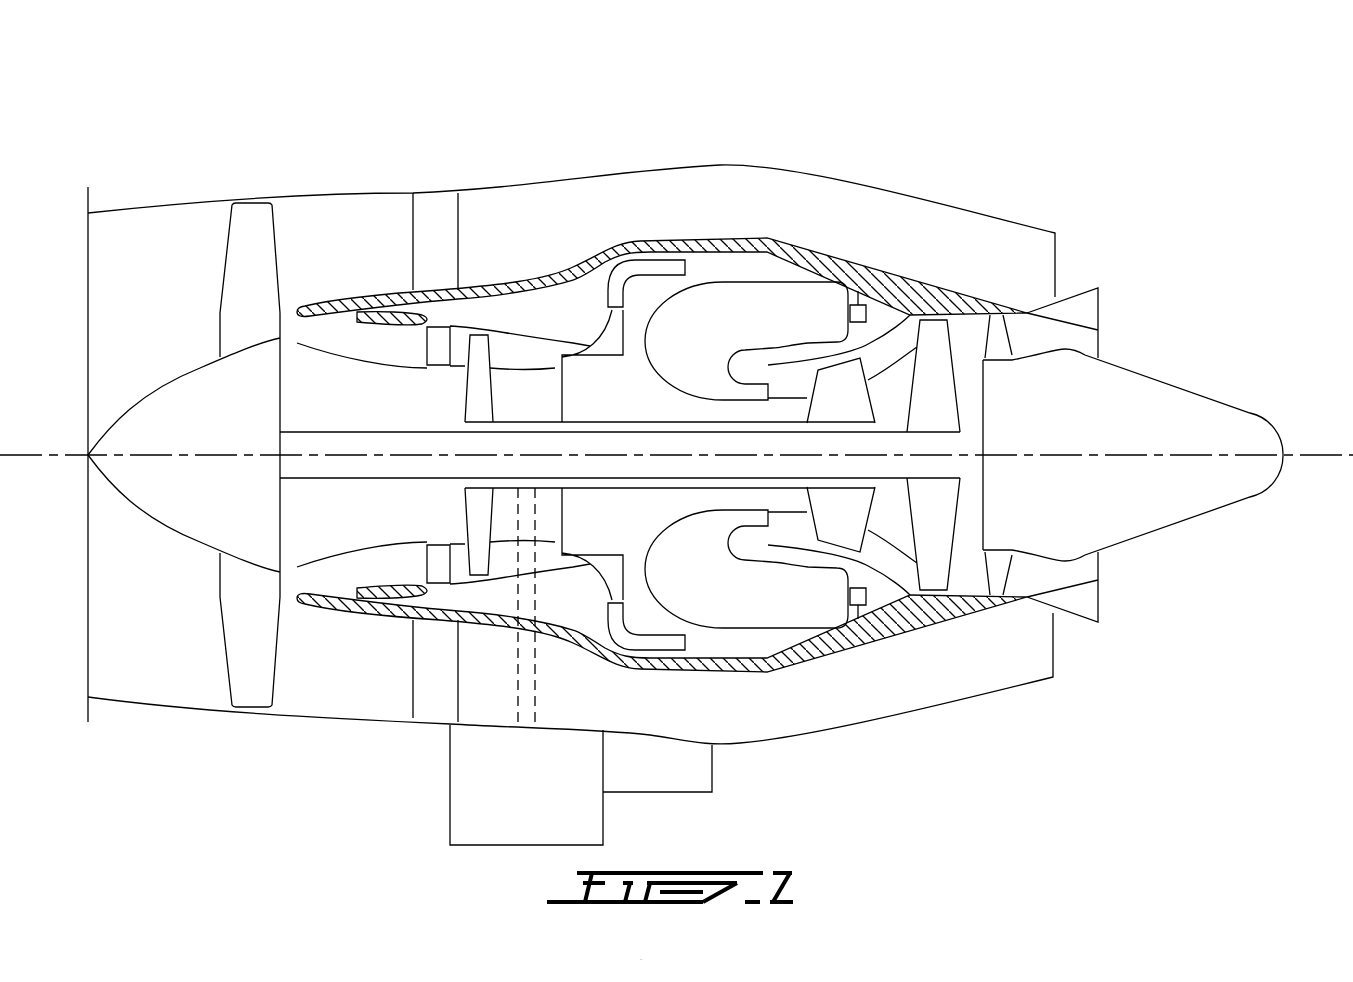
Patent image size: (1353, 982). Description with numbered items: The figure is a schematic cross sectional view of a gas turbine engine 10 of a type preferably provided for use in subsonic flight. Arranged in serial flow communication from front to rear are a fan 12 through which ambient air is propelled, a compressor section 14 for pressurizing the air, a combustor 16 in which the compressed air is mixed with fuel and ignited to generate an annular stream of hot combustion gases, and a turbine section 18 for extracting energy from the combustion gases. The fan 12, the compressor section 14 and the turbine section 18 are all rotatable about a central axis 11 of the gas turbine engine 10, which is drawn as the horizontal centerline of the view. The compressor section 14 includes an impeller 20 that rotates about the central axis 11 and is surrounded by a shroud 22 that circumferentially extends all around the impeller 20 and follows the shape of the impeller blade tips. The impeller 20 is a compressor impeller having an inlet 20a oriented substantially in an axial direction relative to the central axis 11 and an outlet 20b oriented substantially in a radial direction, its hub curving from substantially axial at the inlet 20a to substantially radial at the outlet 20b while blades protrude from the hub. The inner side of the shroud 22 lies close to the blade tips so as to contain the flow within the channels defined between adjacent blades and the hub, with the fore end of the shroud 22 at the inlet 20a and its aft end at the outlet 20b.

The gas turbine engine 10 is at (912, 110).
The central axis 11 is at (1325, 455).
The fan 12 is at (253, 625).
The compressor section 14 is at (515, 347).
The combustor 16 is at (748, 303).
The turbine section 18 is at (890, 527).
The impeller 20 is at (541, 454).
The inlet 20a is at (557, 512).
The outlet 20b is at (650, 582).
The shroud 22 is at (587, 568).